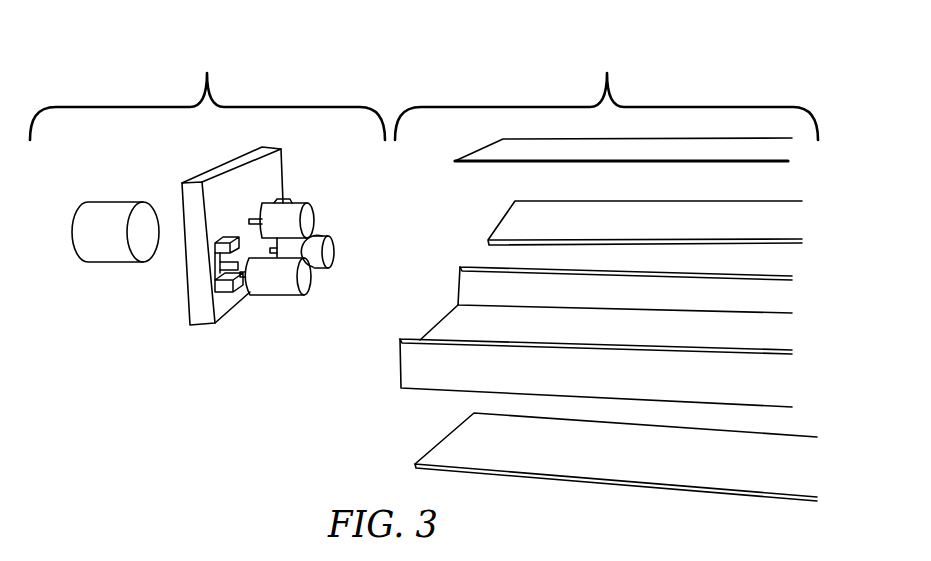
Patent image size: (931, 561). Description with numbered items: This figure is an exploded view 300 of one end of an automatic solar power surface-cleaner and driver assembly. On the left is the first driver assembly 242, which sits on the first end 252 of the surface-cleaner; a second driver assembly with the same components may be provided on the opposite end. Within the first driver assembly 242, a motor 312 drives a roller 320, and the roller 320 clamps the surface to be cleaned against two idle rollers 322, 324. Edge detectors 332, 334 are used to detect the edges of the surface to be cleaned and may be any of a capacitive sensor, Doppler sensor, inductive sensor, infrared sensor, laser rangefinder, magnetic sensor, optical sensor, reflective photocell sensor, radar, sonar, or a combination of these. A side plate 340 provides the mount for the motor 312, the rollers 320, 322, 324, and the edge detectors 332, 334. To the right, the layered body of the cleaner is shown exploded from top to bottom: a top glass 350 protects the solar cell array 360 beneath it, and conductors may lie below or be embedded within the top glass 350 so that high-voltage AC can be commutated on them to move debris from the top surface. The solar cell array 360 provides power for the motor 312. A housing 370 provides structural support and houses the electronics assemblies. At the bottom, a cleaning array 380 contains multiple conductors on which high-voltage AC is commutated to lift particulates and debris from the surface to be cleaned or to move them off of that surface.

The exploded view 300 is at (96, 57).
The first driver assembly 242 is at (207, 93).
The first end 252 is at (606, 93).
The motor 312 is at (103, 220).
The side plate 340 is at (218, 167).
The edge detector 332 is at (214, 297).
The roller 320 is at (298, 223).
The edge detector 334 is at (287, 200).
The idle roller 322 is at (313, 258).
The idle roller 324 is at (286, 284).
The top glass 350 is at (713, 155).
The solar cell array 360 is at (713, 215).
The housing 370 is at (713, 296).
The cleaning array 380 is at (713, 457).